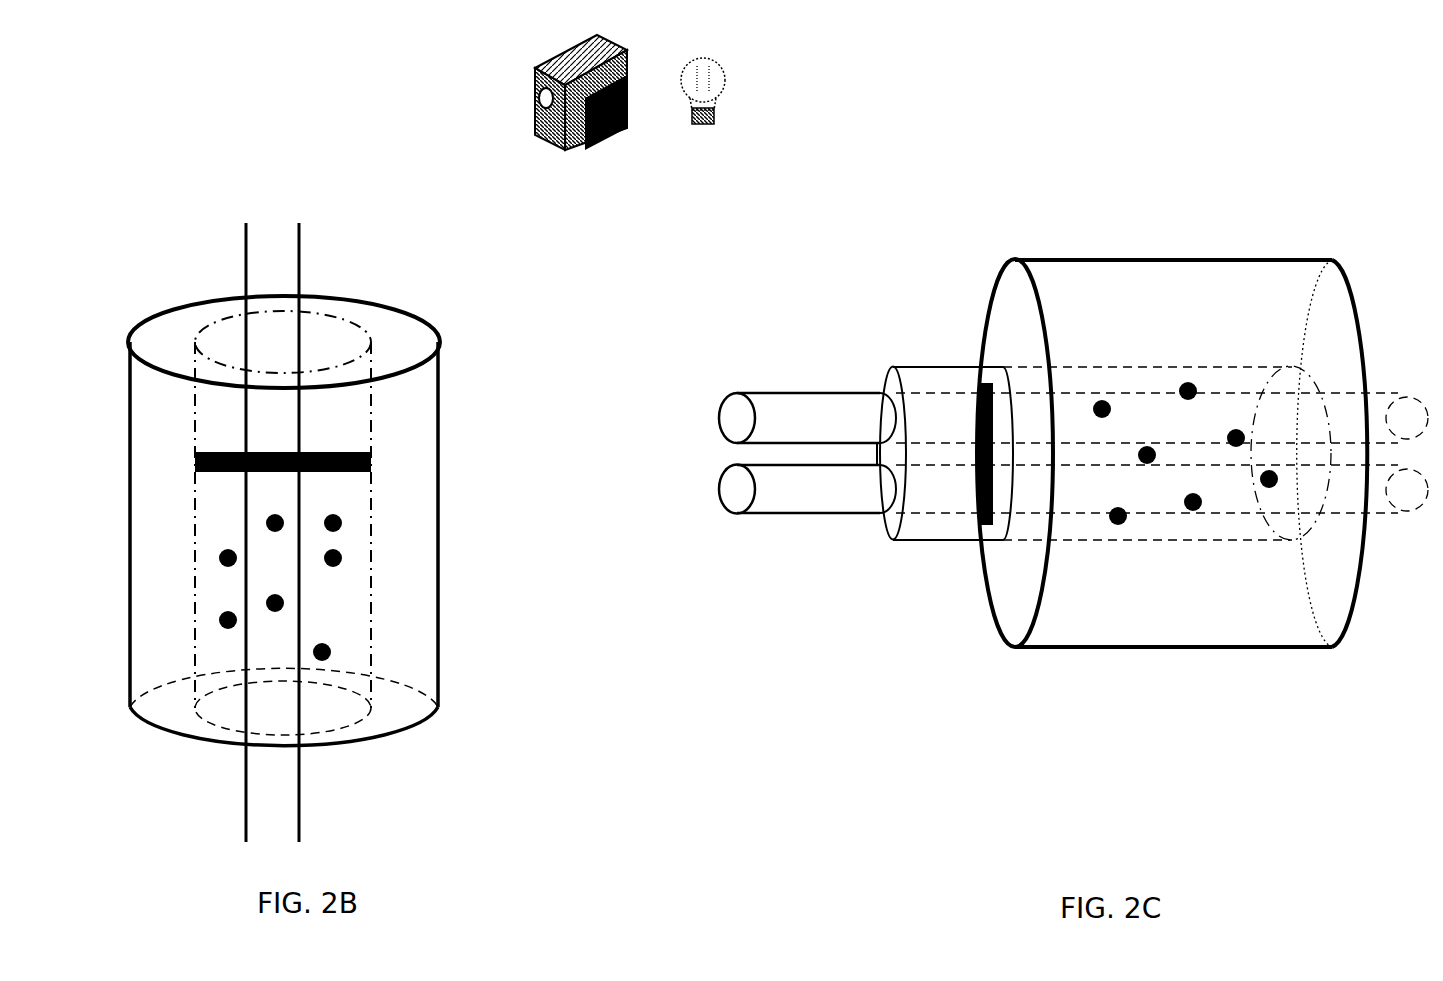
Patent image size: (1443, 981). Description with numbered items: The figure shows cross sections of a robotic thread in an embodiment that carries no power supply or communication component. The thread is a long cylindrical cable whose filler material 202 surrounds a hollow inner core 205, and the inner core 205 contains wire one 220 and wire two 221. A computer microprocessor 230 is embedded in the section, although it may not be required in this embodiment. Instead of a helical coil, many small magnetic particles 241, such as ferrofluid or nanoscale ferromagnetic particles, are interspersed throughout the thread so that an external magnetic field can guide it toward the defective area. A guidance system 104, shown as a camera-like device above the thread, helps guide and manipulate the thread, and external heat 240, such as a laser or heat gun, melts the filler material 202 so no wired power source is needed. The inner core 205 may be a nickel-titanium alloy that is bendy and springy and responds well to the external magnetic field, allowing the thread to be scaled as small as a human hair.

In FIG. 2B, the guidance system 104 is at (533, 100).
In FIG. 2B, the filler material 202 is at (420, 490).
In FIG. 2C, the filler material 202 is at (1003, 298).
In FIG. 2B, the inner core 205 is at (316, 318).
In FIG. 2C, the inner core 205 is at (943, 541).
In FIG. 2B, the wire one 220 is at (248, 222).
In FIG. 2C, the wire one 220 is at (728, 393).
In FIG. 2B, the wire two 221 is at (300, 222).
In FIG. 2C, the wire two 221 is at (706, 485).
In FIG. 2B, the computer microprocessor 230 is at (195, 472).
In FIG. 2C, the computer microprocessor 230 is at (985, 530).
In FIG. 2B, the external heat 240 is at (723, 100).
In FIG. 2B, the magnetic particles 241 is at (290, 603).
In FIG. 2C, the magnetic particles 241 is at (1266, 466).